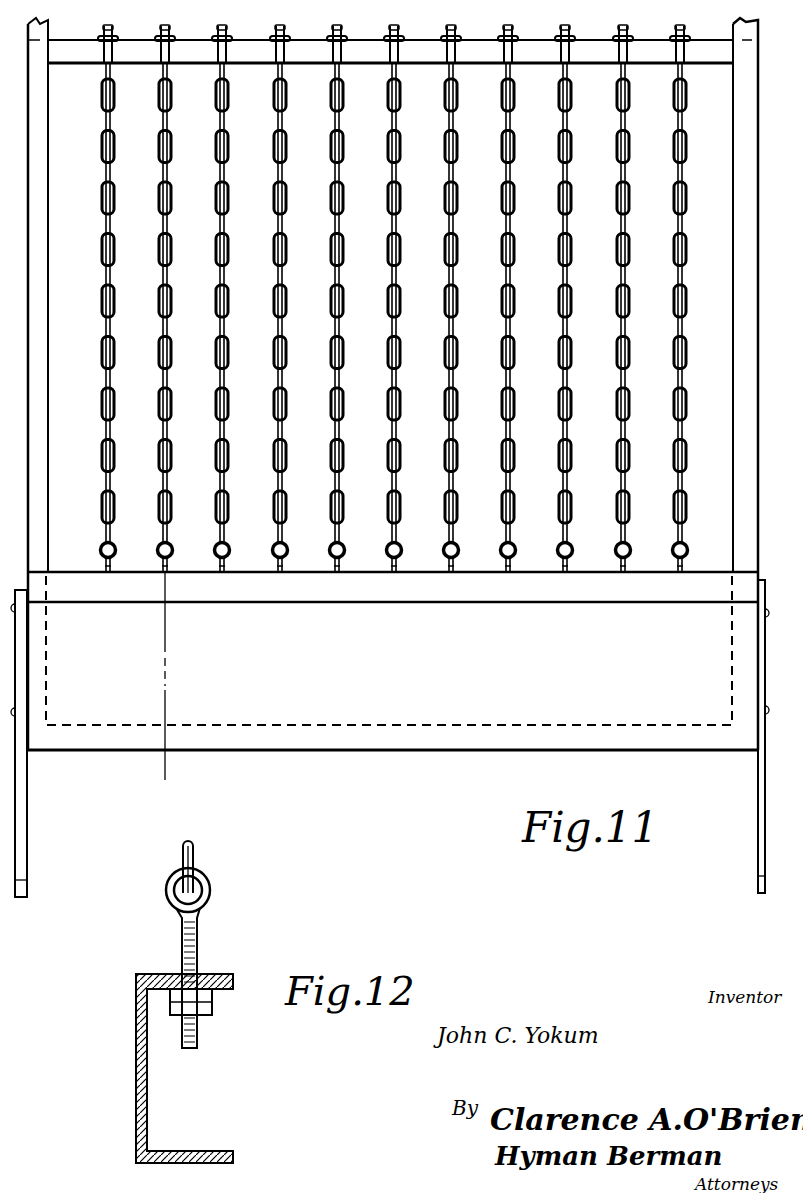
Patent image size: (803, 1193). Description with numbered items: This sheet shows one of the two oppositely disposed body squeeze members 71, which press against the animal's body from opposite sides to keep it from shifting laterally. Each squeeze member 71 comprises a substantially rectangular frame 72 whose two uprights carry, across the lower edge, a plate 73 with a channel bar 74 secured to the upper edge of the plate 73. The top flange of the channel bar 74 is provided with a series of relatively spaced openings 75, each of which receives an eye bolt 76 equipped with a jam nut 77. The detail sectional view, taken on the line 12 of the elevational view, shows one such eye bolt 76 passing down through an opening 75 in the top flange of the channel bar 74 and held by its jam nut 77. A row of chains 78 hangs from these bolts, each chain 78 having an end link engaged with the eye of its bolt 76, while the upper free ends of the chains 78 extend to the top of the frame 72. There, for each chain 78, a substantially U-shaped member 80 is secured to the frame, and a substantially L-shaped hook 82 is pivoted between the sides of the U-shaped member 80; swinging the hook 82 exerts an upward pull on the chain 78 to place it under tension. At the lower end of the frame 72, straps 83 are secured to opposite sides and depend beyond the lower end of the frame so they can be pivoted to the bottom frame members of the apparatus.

In FIG. 11, the body squeeze member 71 is at (597, 40).
In FIG. 11, the rectangular frame 72 is at (42, 464).
In FIG. 11, the plate 73 is at (356, 712).
In FIG. 11, the channel bar 74 is at (350, 592).
In FIG. 12, the channel bar 74 is at (136, 1076).
In FIG. 12, the openings 75 is at (199, 986).
In FIG. 11, the eye bolts 76 is at (280, 574).
In FIG. 12, the eye bolts 76 is at (182, 930).
In FIG. 12, the jam nuts 77 is at (214, 997).
In FIG. 11, the chains 78 is at (160, 264).
In FIG. 12, the chains 78 is at (190, 862).
In FIG. 11, the U-shaped member 80 is at (116, 32).
In FIG. 11, the L-shaped hook 82 is at (182, 37).
In FIG. 11, the straps 83 is at (28, 824).
In FIG. 11, the section line 12— 12 is at (170, 533).